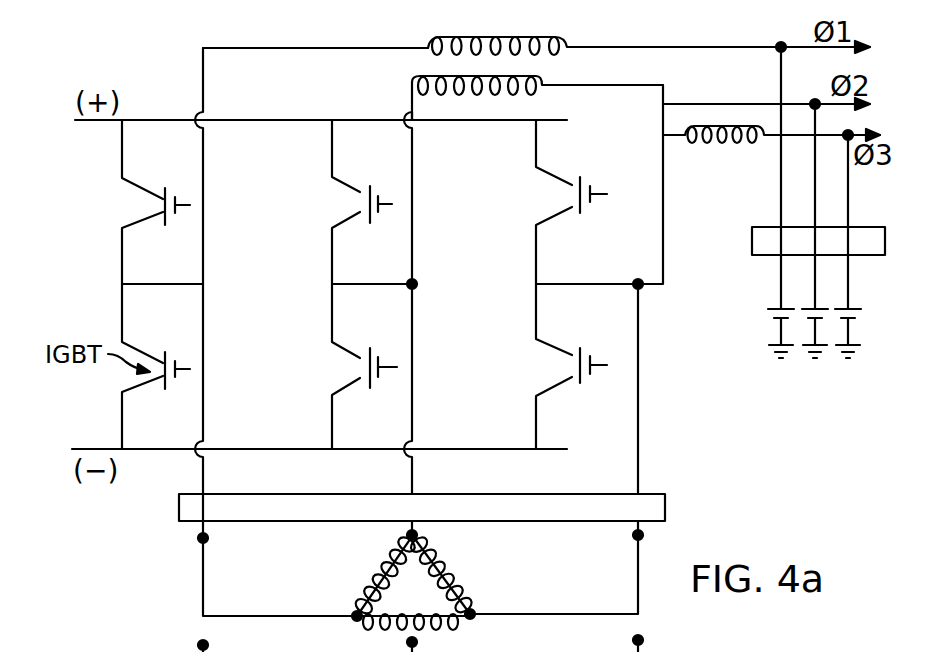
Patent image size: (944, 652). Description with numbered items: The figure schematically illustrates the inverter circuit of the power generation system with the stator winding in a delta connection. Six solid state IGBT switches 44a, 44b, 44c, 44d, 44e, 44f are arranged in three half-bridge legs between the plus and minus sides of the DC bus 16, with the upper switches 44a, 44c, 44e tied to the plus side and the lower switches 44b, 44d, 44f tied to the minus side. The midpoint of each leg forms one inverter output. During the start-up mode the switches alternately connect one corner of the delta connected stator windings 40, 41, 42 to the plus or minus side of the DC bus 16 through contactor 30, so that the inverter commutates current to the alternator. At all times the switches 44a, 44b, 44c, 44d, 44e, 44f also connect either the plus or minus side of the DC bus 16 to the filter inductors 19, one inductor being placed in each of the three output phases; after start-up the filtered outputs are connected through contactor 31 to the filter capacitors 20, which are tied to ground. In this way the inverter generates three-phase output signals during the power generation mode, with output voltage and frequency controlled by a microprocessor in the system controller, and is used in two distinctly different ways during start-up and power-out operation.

The DC bus 16 is at (100, 122).
The filter inductors 19 is at (548, 35).
The filter capacitors 20 is at (764, 320).
The contactor 30 is at (665, 500).
The contactor 31 is at (752, 240).
The stator winding 40 is at (378, 567).
The stator winding 41 is at (448, 558).
The stator winding 42 is at (370, 628).
The solid state switch 44a is at (147, 188).
The solid state switch 44b is at (147, 352).
The solid state switch 44c is at (358, 186).
The solid state switch 44d is at (348, 350).
The solid state switch 44e is at (571, 186).
The solid state switch 44f is at (558, 349).